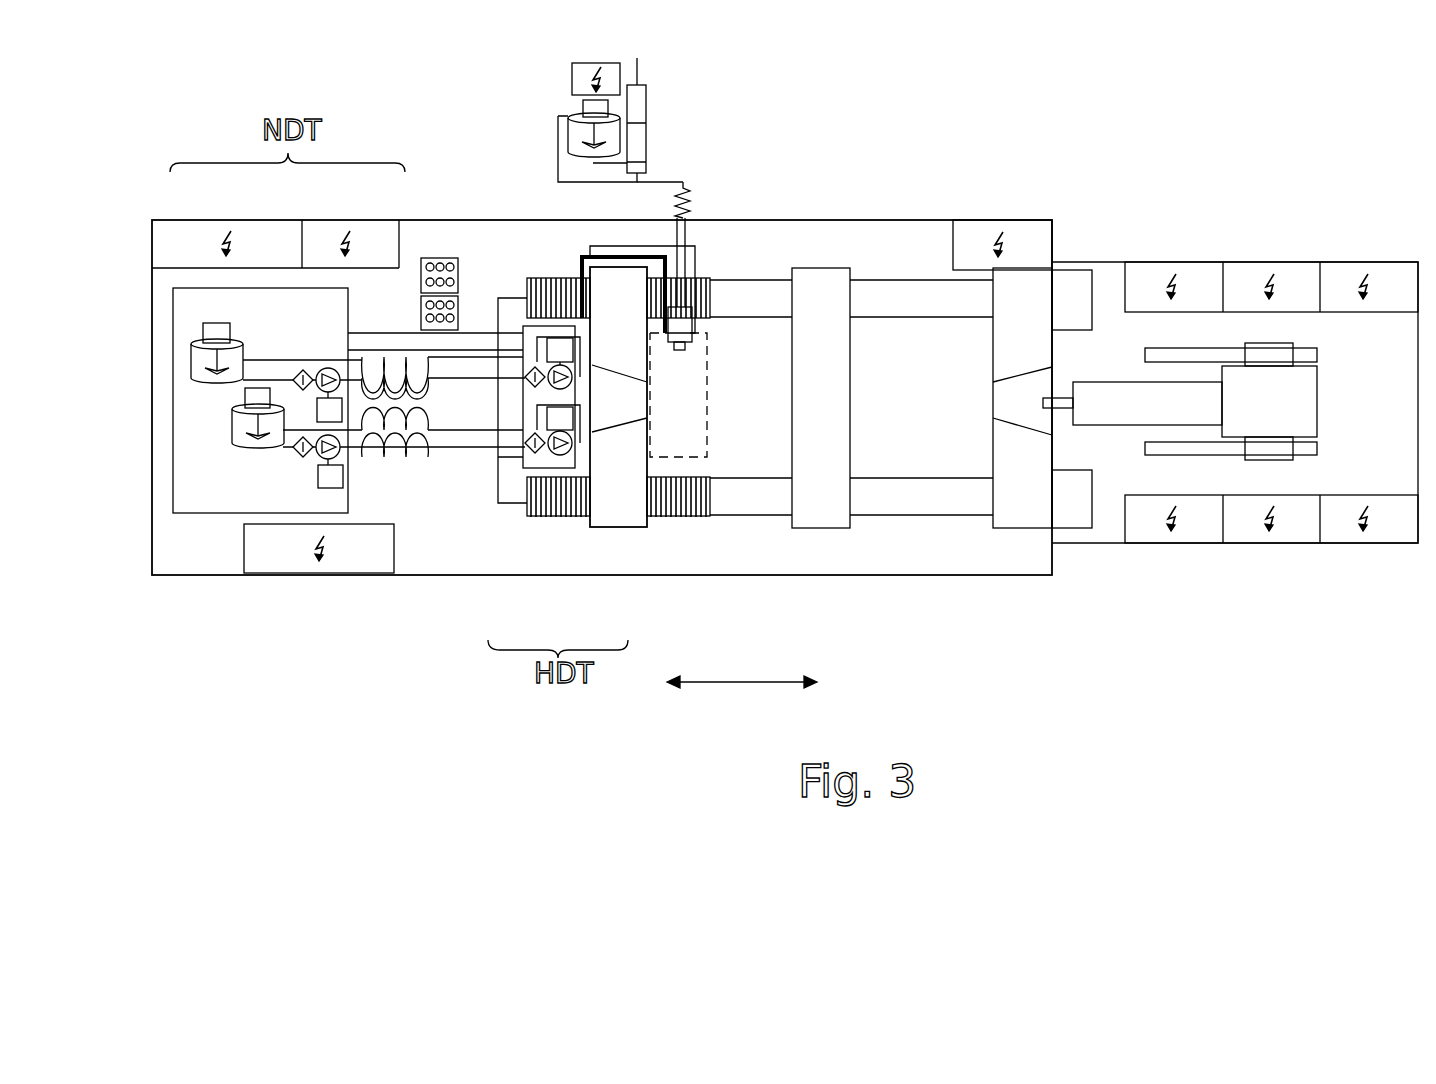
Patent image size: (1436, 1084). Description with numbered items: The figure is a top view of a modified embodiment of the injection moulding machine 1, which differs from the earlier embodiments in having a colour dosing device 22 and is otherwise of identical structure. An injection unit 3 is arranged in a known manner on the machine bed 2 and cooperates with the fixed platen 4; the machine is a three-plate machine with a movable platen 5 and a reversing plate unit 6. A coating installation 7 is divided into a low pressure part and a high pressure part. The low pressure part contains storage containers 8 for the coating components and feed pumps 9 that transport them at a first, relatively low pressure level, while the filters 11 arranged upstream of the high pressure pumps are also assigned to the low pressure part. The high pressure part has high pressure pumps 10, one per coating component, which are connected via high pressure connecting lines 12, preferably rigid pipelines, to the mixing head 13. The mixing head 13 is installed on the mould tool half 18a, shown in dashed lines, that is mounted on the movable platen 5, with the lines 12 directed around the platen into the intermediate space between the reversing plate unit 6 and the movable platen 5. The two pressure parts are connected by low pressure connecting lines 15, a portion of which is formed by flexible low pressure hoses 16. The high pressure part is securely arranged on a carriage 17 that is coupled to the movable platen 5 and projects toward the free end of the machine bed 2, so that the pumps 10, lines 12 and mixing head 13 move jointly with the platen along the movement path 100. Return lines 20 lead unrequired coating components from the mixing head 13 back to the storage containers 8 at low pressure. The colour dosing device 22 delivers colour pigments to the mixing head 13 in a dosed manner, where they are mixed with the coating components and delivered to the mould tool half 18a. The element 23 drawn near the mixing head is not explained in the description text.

The injection moulding machine 1 is at (983, 193).
The machine bed 2 is at (930, 552).
The injection unit 3 is at (1097, 395).
The fixed platen 4 is at (1035, 290).
The movable platen 5 is at (635, 503).
The reversing plate unit 6 is at (823, 285).
The coating installation 7 is at (233, 593).
The storage containers 8 is at (203, 323).
The feed pumps 9 is at (317, 372).
The high pressure pumps 10 is at (553, 456).
The filters 11 is at (530, 455).
The high pressure connecting lines 12 is at (583, 445).
The mixing head 13 is at (675, 327).
The low pressure connecting lines 15 is at (435, 357).
The low pressure hoses 16 is at (385, 365).
The carriage 17 is at (508, 310).
The mould tool half 18a is at (687, 367).
The return lines 20 is at (495, 337).
The colour dosing device 22 is at (647, 120).
The injection nozzle 23 is at (608, 390).
The movement path 100 is at (733, 683).